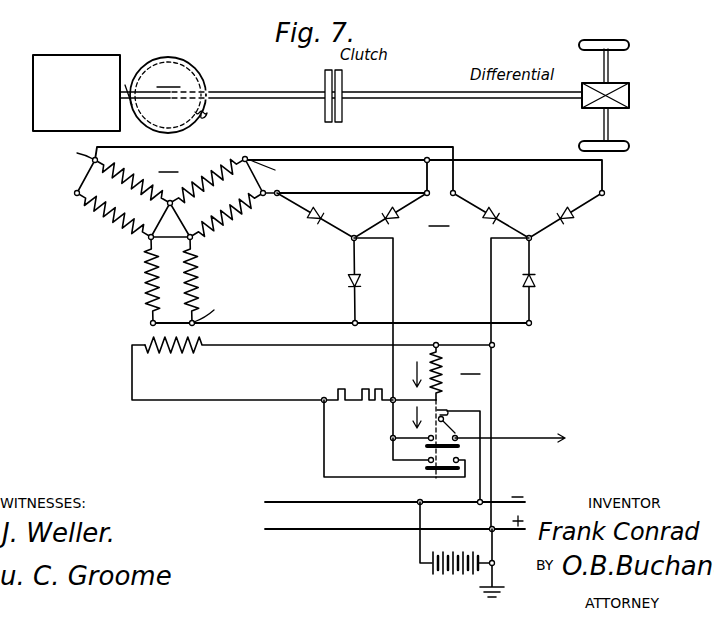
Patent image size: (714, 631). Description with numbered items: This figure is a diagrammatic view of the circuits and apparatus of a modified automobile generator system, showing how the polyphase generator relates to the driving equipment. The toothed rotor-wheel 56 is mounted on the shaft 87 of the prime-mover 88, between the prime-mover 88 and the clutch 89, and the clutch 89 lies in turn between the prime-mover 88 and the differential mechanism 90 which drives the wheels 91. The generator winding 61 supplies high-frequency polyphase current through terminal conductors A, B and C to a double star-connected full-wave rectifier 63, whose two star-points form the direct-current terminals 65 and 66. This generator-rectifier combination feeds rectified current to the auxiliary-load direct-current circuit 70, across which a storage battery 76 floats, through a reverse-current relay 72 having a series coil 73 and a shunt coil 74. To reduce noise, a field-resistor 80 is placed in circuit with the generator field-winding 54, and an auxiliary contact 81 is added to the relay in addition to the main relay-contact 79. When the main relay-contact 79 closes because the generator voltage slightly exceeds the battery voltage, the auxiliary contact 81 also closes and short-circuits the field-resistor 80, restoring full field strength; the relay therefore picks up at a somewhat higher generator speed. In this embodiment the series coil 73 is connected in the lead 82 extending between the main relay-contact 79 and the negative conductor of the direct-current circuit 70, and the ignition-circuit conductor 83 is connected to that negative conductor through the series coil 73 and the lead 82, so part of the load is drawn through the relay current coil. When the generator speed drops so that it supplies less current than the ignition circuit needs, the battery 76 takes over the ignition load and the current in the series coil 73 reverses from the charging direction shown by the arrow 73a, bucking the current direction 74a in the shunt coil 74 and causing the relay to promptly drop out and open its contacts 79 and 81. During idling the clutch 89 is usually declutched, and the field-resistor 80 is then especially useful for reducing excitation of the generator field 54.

The generator field-winding 54 is at (145, 338).
The toothed rotor-wheel 56 is at (168, 95).
The generator winding 61 is at (173, 235).
The full-wave rectifier 63 is at (441, 242).
The direct-current terminal 65 is at (491, 258).
The direct-current terminal lead 66 is at (394, 266).
The auxiliary-load direct-current circuit 70 is at (300, 505).
The reverse-current relay 72 is at (443, 373).
The series coil 73 is at (450, 417).
The charging-direction arrow 73a is at (411, 418).
The shunt coil 74 is at (444, 386).
The shunt-coil current-direction arrow 74a is at (410, 371).
The storage battery 76 is at (473, 578).
The main relay-contact 79 is at (425, 452).
The field-resistor 80 is at (368, 401).
The auxiliary contact 81 is at (425, 472).
The lead 82 is at (480, 488).
The ignition-circuit conductor 83 is at (538, 434).
The shaft 87 is at (128, 90).
The prime-mover 88 is at (60, 132).
The clutch 89 is at (325, 118).
The differential mechanism 90 is at (585, 108).
The wheels 91 is at (630, 147).